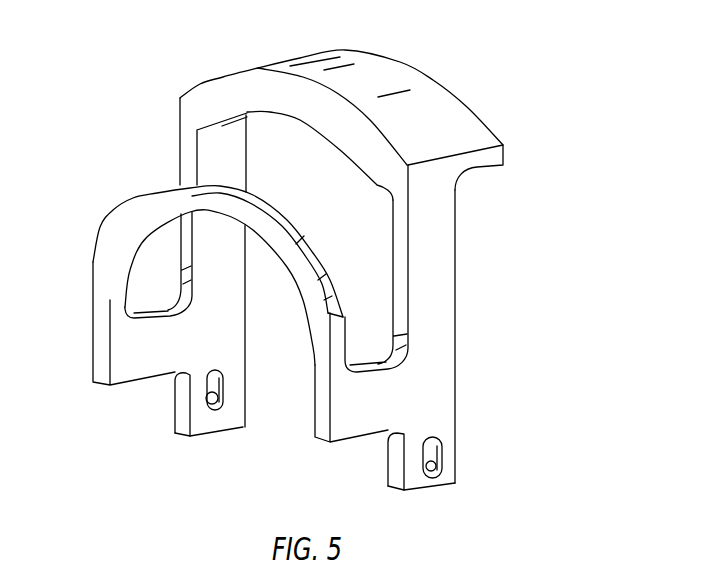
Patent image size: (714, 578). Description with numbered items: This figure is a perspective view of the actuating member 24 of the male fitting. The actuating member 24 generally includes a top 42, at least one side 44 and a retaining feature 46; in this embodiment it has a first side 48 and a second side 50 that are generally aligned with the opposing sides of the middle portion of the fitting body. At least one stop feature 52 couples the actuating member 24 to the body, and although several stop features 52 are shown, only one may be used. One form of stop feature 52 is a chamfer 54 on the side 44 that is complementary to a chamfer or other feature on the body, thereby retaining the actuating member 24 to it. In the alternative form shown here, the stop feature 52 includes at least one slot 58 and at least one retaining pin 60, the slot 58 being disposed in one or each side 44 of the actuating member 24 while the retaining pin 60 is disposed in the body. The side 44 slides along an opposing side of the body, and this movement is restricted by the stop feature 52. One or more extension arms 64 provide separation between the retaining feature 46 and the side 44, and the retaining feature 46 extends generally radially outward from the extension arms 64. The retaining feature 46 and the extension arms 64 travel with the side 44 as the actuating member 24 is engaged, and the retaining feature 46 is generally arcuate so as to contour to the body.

The actuating member 24 is at (223, 64).
The top 42 is at (383, 80).
The side 44 is at (223, 330).
The retaining feature 46 is at (160, 201).
The first side 48 is at (440, 356).
The second side 50 is at (225, 163).
The stop feature 52 is at (220, 383).
The chamfer 54 is at (212, 437).
The slot 58 is at (210, 380).
The retaining pin 60 is at (218, 397).
The extension arm 64 is at (168, 354).